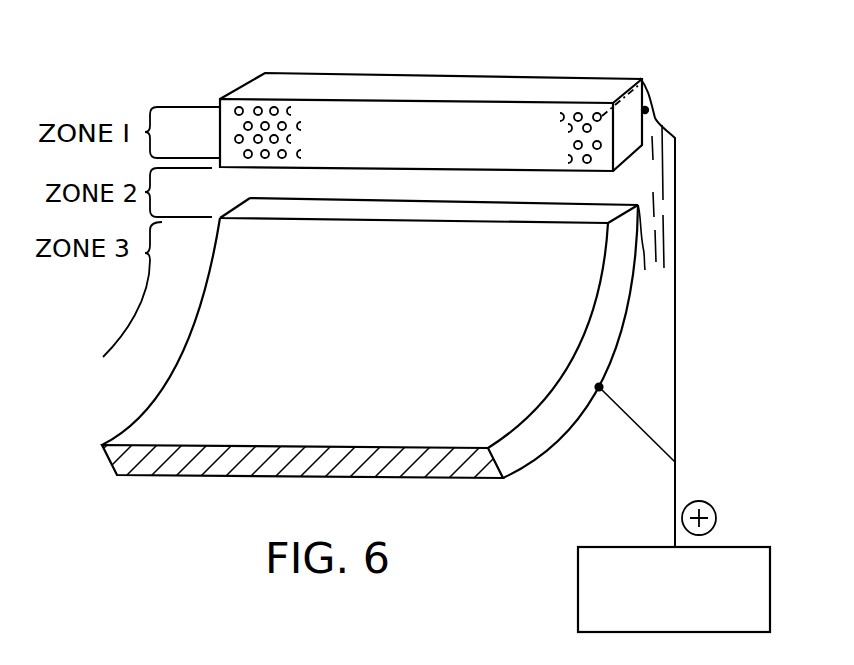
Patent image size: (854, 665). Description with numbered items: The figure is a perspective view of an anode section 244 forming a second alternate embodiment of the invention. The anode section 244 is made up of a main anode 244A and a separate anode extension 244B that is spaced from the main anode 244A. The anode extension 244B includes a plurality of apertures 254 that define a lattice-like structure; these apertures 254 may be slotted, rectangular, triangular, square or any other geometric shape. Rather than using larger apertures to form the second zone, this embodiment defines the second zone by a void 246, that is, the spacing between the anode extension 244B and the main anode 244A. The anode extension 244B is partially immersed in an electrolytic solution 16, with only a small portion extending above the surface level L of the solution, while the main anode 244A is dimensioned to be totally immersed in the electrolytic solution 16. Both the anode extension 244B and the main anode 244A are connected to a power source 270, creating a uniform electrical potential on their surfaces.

The apertures 254 is at (265, 123).
The anode extension 244B is at (443, 117).
The surface level L is at (633, 82).
The void 246 is at (587, 192).
The electrolytic solution 16 is at (658, 235).
The anode section 244 is at (624, 361).
The main anode 244A is at (540, 432).
The power source 270 is at (735, 547).